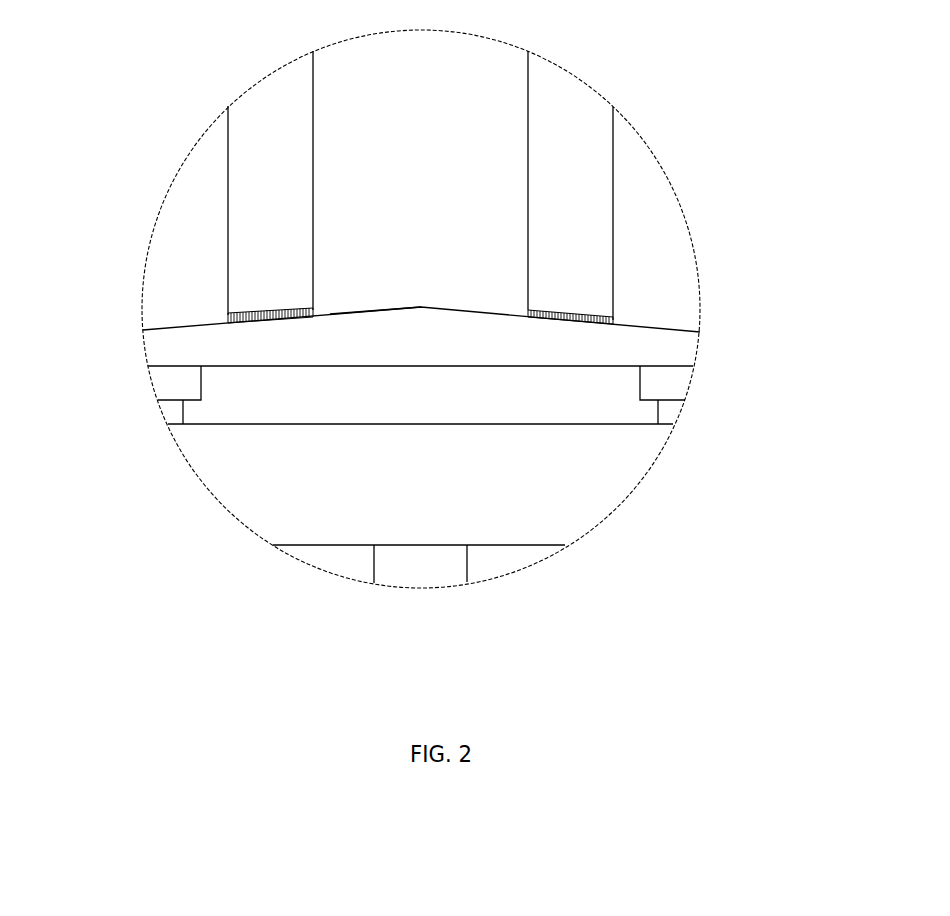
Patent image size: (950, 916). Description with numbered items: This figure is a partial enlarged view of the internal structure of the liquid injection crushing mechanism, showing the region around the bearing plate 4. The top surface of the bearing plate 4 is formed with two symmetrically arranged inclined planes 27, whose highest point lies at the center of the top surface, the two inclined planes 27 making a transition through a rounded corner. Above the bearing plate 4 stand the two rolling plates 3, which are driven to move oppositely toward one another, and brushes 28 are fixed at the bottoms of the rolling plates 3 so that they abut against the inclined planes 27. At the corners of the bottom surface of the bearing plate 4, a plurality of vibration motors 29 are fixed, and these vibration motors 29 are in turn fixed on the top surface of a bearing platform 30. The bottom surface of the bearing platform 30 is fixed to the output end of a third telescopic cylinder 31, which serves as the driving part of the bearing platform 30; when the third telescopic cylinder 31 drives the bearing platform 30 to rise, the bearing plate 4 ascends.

The rolling plate 3 is at (572, 171).
The bearing plate 4 is at (483, 345).
The inclined plane 27 is at (368, 313).
The brush 28 is at (228, 315).
The vibration motor 29 is at (175, 382).
The bearing platform 30 is at (588, 482).
The third telescopic cylinder 31 is at (420, 562).